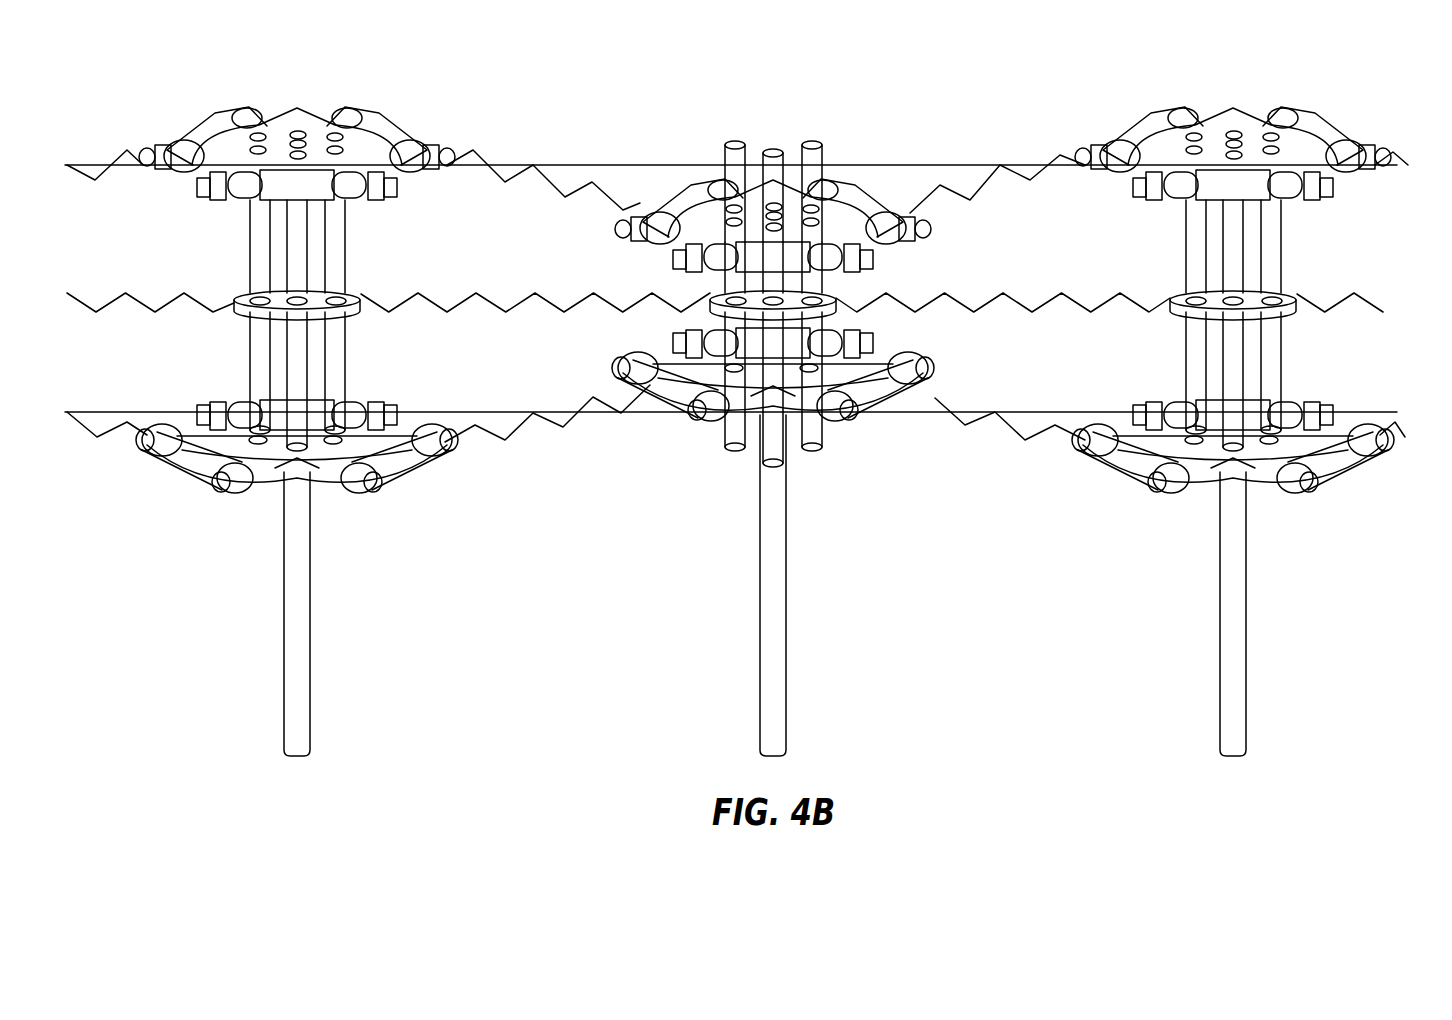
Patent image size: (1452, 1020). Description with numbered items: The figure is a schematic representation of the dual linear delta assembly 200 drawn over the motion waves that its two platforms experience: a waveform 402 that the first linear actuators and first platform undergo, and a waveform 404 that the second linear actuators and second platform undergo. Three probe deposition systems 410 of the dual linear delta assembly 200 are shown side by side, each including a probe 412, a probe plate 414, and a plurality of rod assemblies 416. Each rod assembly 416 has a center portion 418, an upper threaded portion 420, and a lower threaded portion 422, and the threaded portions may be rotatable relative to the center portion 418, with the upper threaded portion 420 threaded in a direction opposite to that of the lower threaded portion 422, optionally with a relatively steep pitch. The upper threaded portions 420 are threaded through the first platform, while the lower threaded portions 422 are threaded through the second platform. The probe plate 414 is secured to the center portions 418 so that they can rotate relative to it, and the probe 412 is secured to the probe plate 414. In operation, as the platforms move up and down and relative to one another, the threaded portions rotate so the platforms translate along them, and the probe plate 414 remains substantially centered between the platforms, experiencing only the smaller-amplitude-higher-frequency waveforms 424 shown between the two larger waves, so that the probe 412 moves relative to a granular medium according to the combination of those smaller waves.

The dual linear delta assembly 200 is at (996, 112).
The waveform 402 is at (982, 192).
The waveform 404 is at (1000, 422).
The probe deposition system 410 is at (370, 360).
The probe 412 is at (303, 598).
The probe plate 414 is at (350, 305).
The rod assembly 416 is at (826, 359).
The center portion 418 is at (338, 282).
The upper threaded portion 420 is at (823, 167).
The lower threaded portion 422 is at (818, 428).
The smaller-amplitude-higher-frequency waveforms 424 is at (1381, 299).